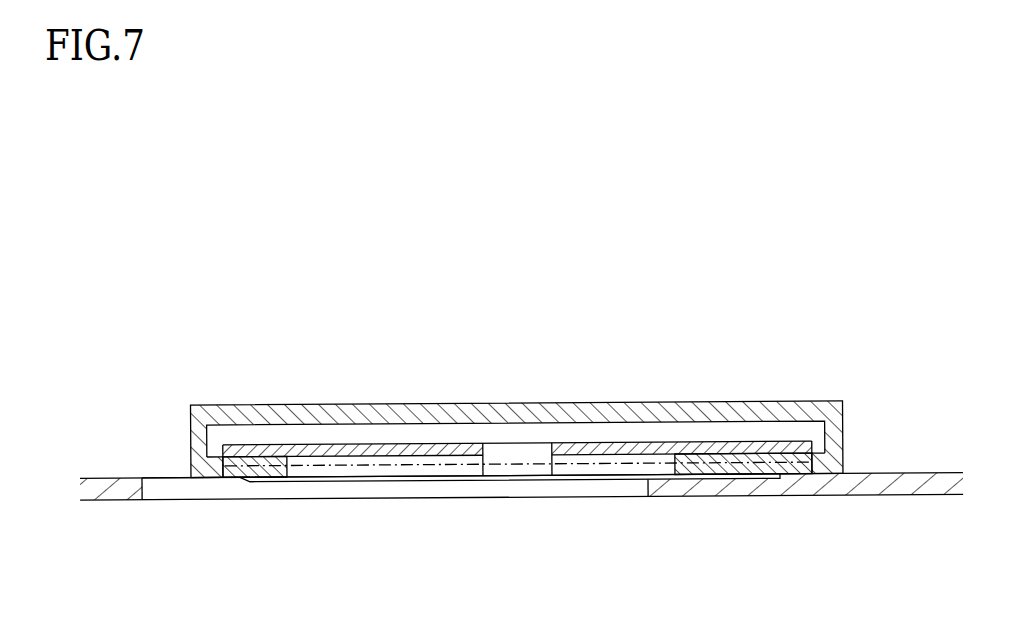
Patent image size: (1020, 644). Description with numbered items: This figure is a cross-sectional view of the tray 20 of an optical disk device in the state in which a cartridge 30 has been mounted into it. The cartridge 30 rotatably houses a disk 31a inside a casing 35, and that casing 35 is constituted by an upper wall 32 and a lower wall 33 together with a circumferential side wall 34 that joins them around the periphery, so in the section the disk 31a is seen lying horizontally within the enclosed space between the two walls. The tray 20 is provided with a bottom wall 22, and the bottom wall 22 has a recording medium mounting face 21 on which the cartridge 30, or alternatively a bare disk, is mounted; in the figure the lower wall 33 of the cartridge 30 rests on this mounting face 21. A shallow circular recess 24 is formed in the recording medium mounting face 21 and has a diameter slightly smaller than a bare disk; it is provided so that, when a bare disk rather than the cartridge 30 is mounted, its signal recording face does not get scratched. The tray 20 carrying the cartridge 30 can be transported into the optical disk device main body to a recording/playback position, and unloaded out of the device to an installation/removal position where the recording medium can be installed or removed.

The tray 20 is at (100, 474).
The recording medium mounting face 21 is at (182, 478).
The bottom wall 22 is at (875, 487).
The circular recess 24 is at (393, 482).
The cartridge 30 is at (518, 385).
The disk 31a is at (607, 445).
The upper wall 32 is at (382, 407).
The lower wall 33 is at (241, 472).
The circumferential side wall 34 is at (833, 442).
The casing 35 is at (330, 405).